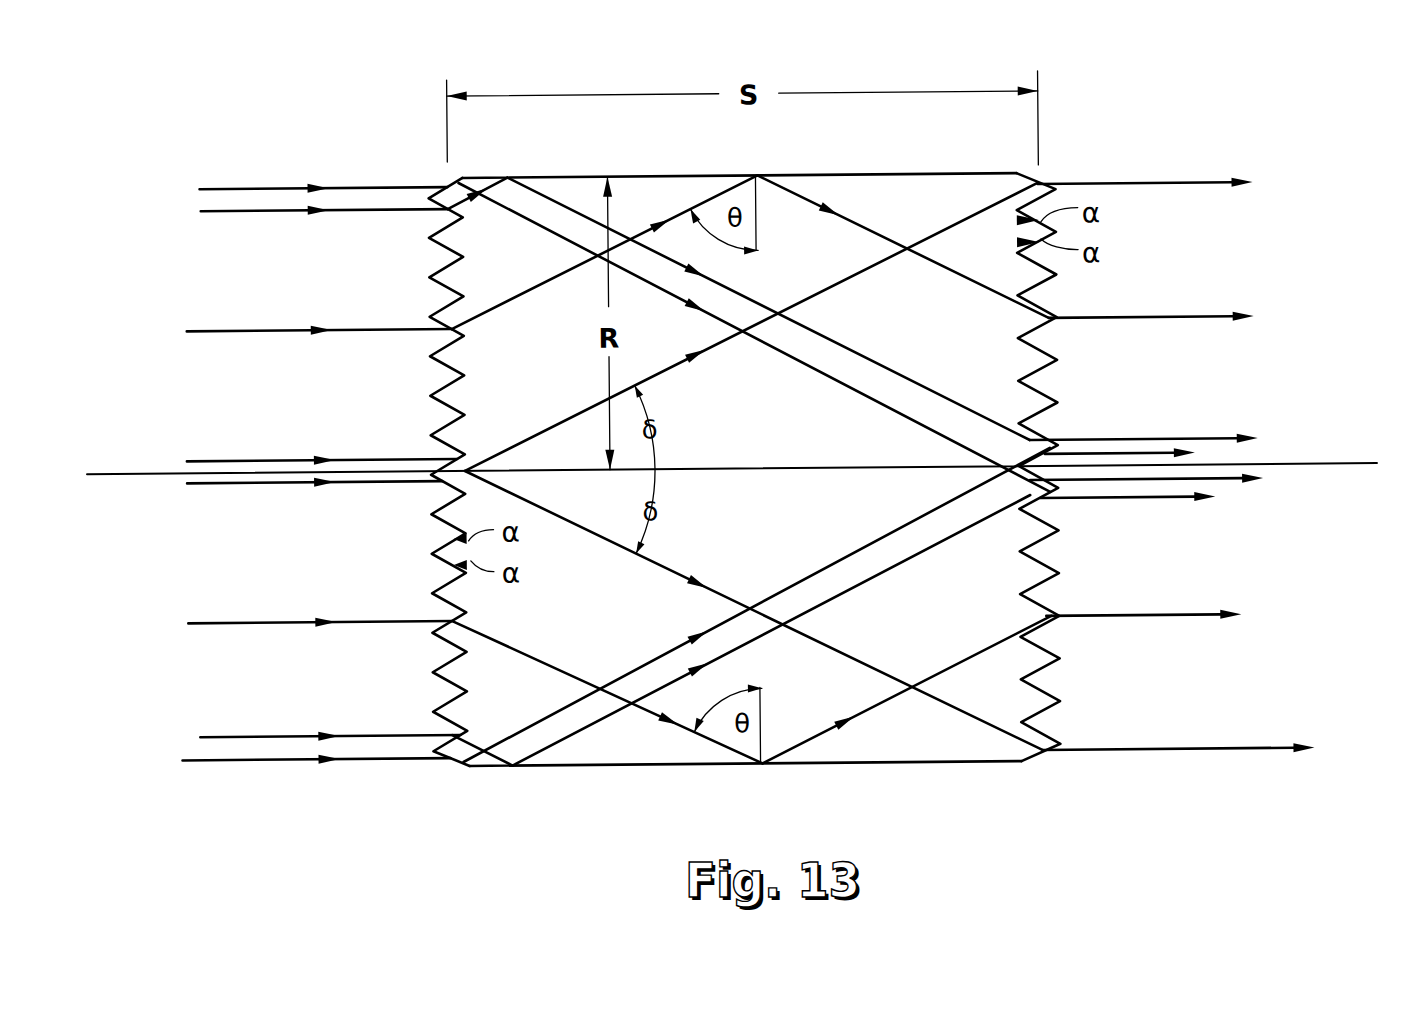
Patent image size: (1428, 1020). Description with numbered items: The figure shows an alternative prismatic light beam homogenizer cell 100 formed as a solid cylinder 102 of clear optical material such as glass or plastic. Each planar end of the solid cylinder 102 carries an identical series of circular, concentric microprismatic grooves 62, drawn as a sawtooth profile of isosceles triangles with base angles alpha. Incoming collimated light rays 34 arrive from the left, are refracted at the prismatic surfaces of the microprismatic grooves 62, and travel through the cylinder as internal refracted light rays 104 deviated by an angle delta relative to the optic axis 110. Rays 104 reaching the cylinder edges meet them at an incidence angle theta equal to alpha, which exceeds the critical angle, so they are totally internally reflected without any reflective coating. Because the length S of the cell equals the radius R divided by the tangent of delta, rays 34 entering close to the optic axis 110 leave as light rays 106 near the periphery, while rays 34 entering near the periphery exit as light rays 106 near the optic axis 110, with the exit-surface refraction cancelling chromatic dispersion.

The alternative prismatic light beam homogenizer cell 100 is at (779, 410).
The solid cylinder 102 is at (825, 178).
The internal refracted light rays 104 is at (510, 301).
The exit light rays 106 is at (1173, 441).
The optic axis 110 is at (1330, 470).
The incoming collimated light rays 34 is at (287, 459).
The microprismatic grooves 62 is at (445, 413).